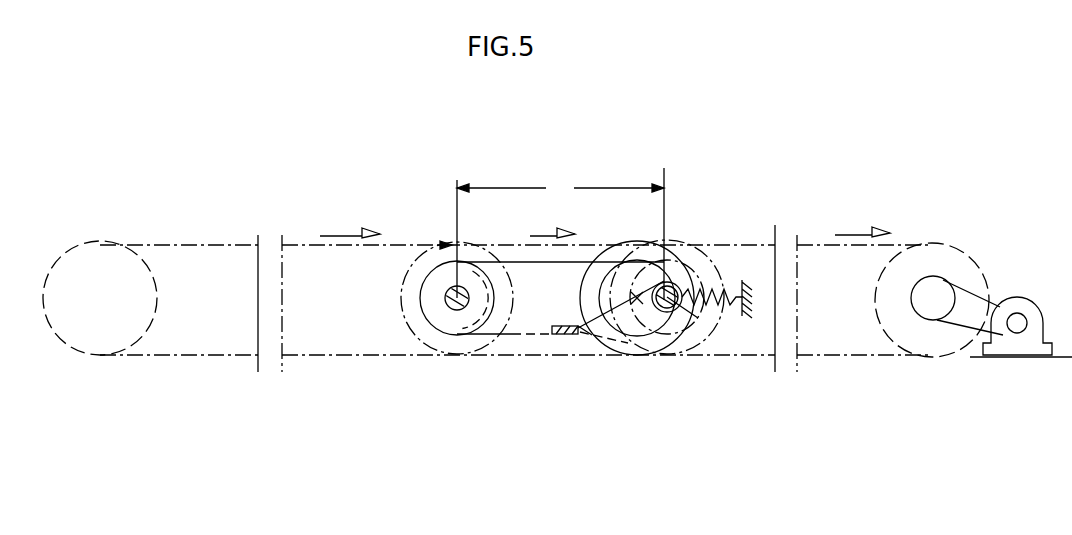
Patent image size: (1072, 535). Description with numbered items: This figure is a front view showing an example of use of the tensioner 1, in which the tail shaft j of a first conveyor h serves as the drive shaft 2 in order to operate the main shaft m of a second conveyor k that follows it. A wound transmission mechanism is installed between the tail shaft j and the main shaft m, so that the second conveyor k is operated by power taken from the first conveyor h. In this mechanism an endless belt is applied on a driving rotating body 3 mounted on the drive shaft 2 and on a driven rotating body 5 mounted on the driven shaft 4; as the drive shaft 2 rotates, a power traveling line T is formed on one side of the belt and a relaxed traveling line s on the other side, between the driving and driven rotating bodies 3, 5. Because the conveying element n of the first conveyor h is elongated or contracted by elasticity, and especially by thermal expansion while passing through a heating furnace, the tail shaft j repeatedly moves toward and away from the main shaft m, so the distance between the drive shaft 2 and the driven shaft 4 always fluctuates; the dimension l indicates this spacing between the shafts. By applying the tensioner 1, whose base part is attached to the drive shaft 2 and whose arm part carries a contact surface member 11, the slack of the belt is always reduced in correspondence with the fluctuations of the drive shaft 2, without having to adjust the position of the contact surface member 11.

The tensioner 1 is at (612, 348).
The drive shaft 2 is at (664, 286).
The driving rotating body 3 is at (698, 318).
The driven shaft 4 is at (412, 342).
The driven rotating body 5 is at (432, 272).
The contact surface member 11 is at (560, 338).
The second conveyor k is at (300, 240).
The power traveling line T is at (512, 260).
The center distance l is at (560, 234).
The first conveyor h is at (716, 242).
The conveying element n is at (812, 243).
The main shaft m is at (455, 312).
The relaxed traveling line s is at (512, 336).
The tail shaft j is at (677, 326).